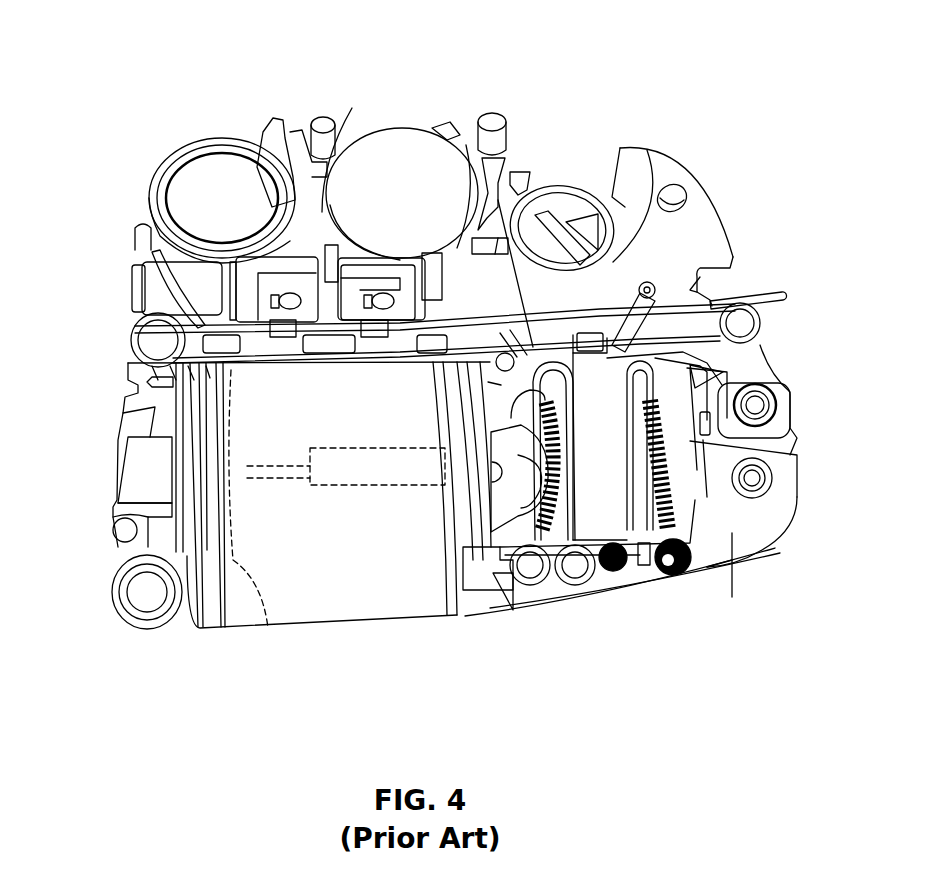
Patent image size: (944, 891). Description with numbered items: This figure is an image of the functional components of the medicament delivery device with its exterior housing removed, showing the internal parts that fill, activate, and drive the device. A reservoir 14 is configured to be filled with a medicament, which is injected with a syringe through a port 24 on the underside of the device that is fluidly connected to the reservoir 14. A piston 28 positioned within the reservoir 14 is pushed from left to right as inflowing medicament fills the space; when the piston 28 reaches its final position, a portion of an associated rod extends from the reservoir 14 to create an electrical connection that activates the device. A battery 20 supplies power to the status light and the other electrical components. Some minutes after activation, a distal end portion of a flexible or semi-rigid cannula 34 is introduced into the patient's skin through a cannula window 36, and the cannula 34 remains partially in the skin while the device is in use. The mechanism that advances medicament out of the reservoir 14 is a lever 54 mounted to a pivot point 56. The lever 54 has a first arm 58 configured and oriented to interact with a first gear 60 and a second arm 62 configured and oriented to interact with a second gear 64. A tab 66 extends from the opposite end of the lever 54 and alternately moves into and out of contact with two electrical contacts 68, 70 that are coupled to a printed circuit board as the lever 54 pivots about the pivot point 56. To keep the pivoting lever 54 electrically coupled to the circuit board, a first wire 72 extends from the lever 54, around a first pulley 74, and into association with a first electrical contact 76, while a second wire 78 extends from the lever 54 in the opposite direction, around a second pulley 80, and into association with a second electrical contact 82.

The reservoir 14 is at (410, 590).
The battery 20 is at (403, 158).
The port 24 is at (137, 592).
The piston 28 is at (233, 567).
The cannula 34 is at (783, 292).
The cannula window 36 is at (733, 268).
The lever 54 is at (605, 482).
The pivot point 56 is at (605, 427).
The first arm 58 is at (492, 130).
The first gear 60 is at (537, 565).
The second arm 62 is at (775, 397).
The second gear 64 is at (727, 580).
The tab 66 is at (645, 560).
The electrical contact 68 is at (687, 560).
The electrical contact 70 is at (612, 565).
The first wire 72 is at (200, 327).
The first pulley 74 is at (157, 343).
The first electrical contact 76 is at (288, 300).
The second wire 78 is at (678, 305).
The second pulley 80 is at (748, 323).
The second electrical contact 82 is at (383, 300).